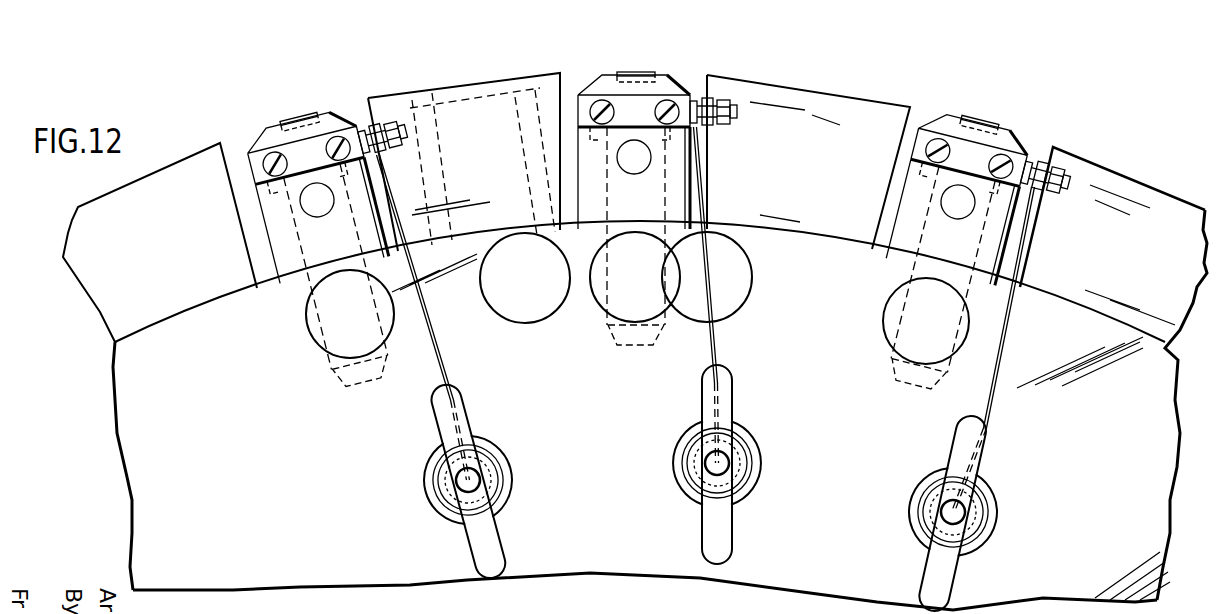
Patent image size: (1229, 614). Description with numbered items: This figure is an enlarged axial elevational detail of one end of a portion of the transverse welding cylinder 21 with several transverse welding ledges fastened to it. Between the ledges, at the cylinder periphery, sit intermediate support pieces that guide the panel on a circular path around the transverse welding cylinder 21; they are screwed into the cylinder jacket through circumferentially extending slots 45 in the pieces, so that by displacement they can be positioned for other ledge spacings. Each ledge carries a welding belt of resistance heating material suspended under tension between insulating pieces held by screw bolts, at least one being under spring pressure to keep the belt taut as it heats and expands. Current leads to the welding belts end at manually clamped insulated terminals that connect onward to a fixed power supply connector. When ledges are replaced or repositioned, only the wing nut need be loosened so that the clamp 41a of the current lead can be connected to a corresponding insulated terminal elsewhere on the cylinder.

The transverse welding cylinder 21 is at (231, 149).
The clamp 41a is at (432, 482).
The circumferentially extending slot 45 is at (477, 130).